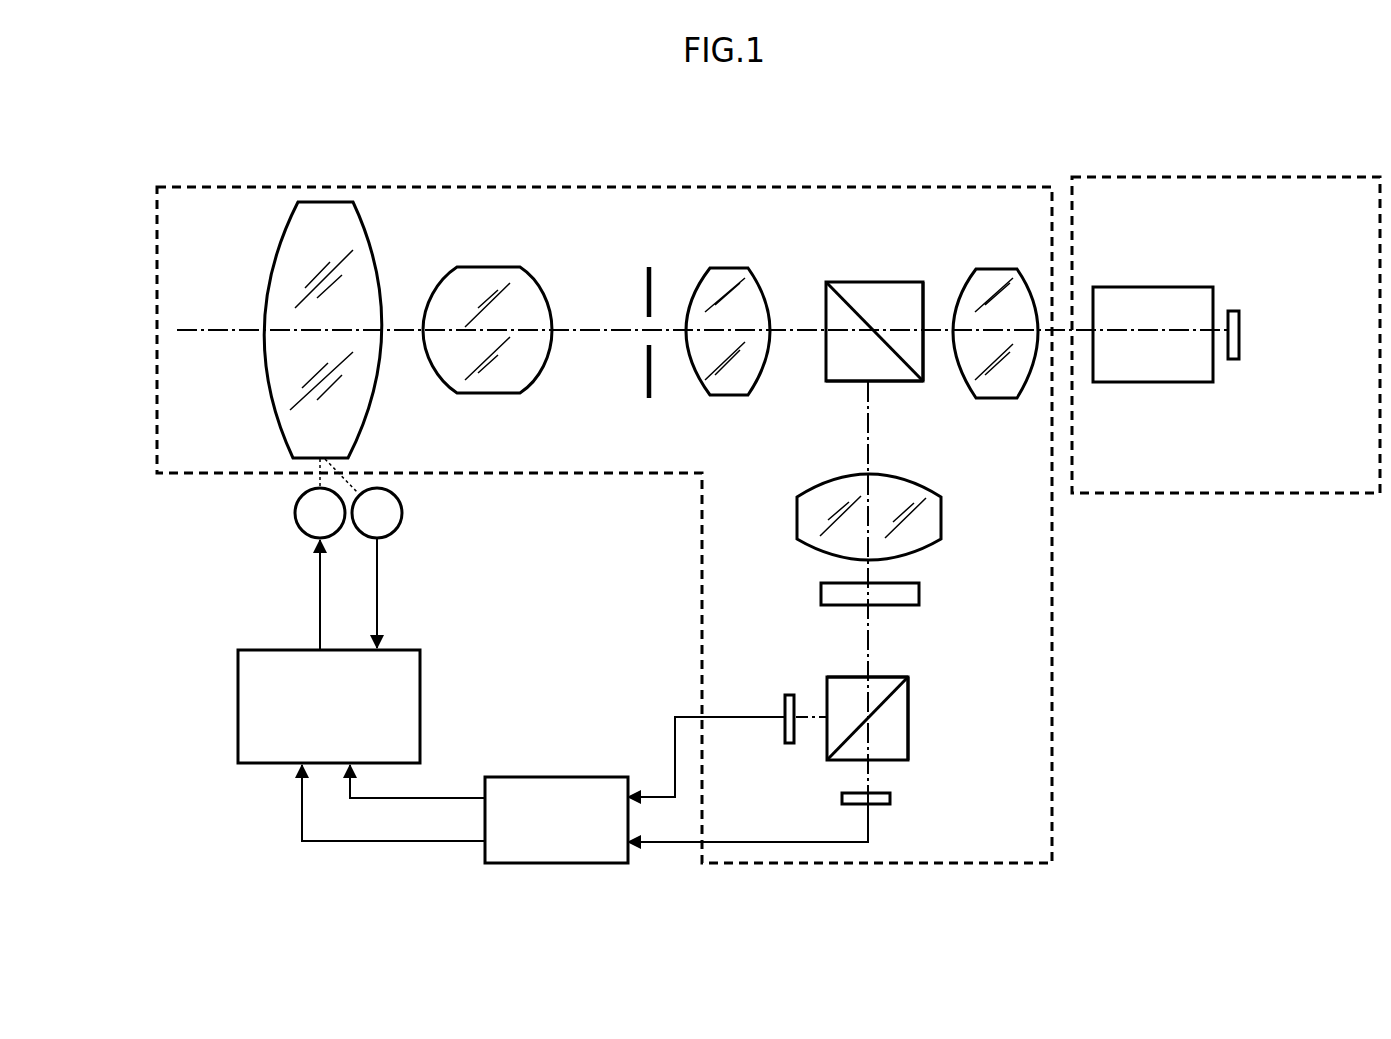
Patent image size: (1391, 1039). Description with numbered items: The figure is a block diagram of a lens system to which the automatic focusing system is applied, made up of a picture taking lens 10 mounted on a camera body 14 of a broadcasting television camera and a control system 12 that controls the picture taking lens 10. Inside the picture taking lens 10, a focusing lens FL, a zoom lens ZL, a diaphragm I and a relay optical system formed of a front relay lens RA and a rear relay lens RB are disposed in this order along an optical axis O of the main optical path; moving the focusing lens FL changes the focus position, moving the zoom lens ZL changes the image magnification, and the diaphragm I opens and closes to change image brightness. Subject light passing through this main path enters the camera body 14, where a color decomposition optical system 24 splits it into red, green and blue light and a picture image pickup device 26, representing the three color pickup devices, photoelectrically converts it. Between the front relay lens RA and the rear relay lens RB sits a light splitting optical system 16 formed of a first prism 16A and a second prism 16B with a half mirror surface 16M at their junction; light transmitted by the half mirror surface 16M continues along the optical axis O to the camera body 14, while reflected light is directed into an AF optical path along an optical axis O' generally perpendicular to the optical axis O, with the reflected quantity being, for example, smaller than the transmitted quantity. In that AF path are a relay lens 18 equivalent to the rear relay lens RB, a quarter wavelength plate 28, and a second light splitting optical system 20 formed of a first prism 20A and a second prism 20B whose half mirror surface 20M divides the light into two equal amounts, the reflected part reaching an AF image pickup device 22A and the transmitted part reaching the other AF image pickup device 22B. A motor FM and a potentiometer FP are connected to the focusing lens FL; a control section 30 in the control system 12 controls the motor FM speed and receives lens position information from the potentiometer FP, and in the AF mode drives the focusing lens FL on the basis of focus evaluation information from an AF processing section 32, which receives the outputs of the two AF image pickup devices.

The picture taking lens 10 is at (855, 187).
The control system 12 is at (149, 680).
The camera body 14 is at (1228, 176).
The light splitting optical system 16 is at (887, 251).
The first prism 16A is at (835, 383).
The second prism 16B is at (913, 305).
The half mirror surface 16M is at (832, 310).
The relay lens 18 is at (944, 516).
The light splitting optical system 20 is at (944, 658).
The first prism 20A is at (838, 677).
The second prism 20B is at (910, 718).
The half mirror surface 20M is at (884, 693).
The AF image pickup device 22A is at (783, 713).
The AF image pickup device 22B is at (892, 798).
The color decomposition optical system 24 is at (1153, 287).
The picture image pickup device 26 is at (1242, 335).
The quarter wavelength plate 28 is at (921, 595).
The control section 30 is at (257, 765).
The AF processing section 32 is at (555, 865).
The focusing lens FL is at (323, 201).
The zoom lens ZL is at (488, 267).
The diaphragm I is at (650, 262).
The front relay lens RA is at (725, 267).
The rear relay lens RB is at (993, 267).
The optical axis O is at (702, 300).
The optical axis O' is at (900, 597).
The motor FM is at (298, 537).
The potentiometer FP is at (400, 537).